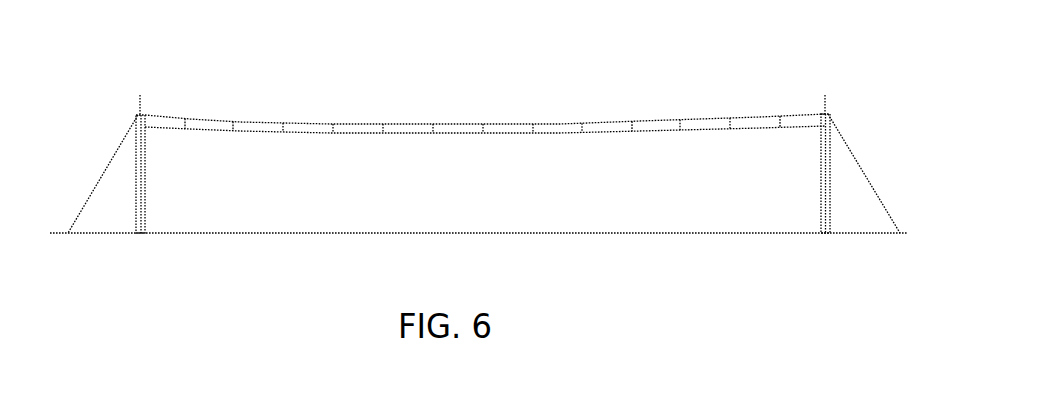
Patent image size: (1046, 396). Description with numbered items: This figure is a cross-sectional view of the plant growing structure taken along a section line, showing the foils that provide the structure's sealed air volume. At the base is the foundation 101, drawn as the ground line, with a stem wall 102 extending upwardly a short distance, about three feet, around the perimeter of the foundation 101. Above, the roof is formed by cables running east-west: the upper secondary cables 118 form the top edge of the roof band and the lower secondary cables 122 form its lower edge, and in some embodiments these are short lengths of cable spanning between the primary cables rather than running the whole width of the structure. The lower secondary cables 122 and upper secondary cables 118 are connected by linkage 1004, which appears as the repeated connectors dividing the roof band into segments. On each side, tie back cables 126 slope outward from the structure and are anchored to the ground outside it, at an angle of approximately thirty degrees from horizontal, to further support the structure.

The foundation 101 is at (252, 232).
The stem wall 102 is at (135, 222).
The tie back cable 126 is at (102, 175).
The upper secondary cable 118 is at (672, 120).
The lower secondary cable 122 is at (598, 132).
The linkage 1004 is at (533, 131).